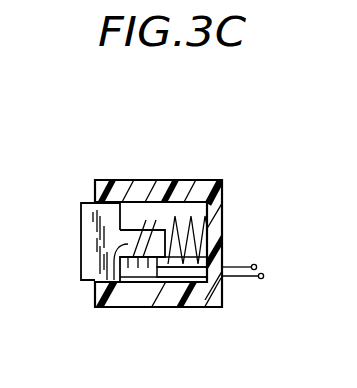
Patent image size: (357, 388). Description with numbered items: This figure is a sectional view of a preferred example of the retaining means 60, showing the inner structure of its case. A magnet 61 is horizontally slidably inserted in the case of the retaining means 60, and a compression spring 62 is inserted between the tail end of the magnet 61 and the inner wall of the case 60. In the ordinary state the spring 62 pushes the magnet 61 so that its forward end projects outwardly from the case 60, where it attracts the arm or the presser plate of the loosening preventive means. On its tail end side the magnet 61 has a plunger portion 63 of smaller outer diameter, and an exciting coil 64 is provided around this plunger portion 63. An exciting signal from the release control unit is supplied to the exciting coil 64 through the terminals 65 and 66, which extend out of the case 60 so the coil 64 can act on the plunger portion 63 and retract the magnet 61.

The retaining means 60 is at (127, 185).
The magnet 61 is at (90, 250).
The compression spring 62 is at (186, 233).
The plunger portion 63 is at (127, 296).
The exciting coil 64 is at (165, 216).
The terminal 65 is at (257, 264).
The terminal 66 is at (263, 278).